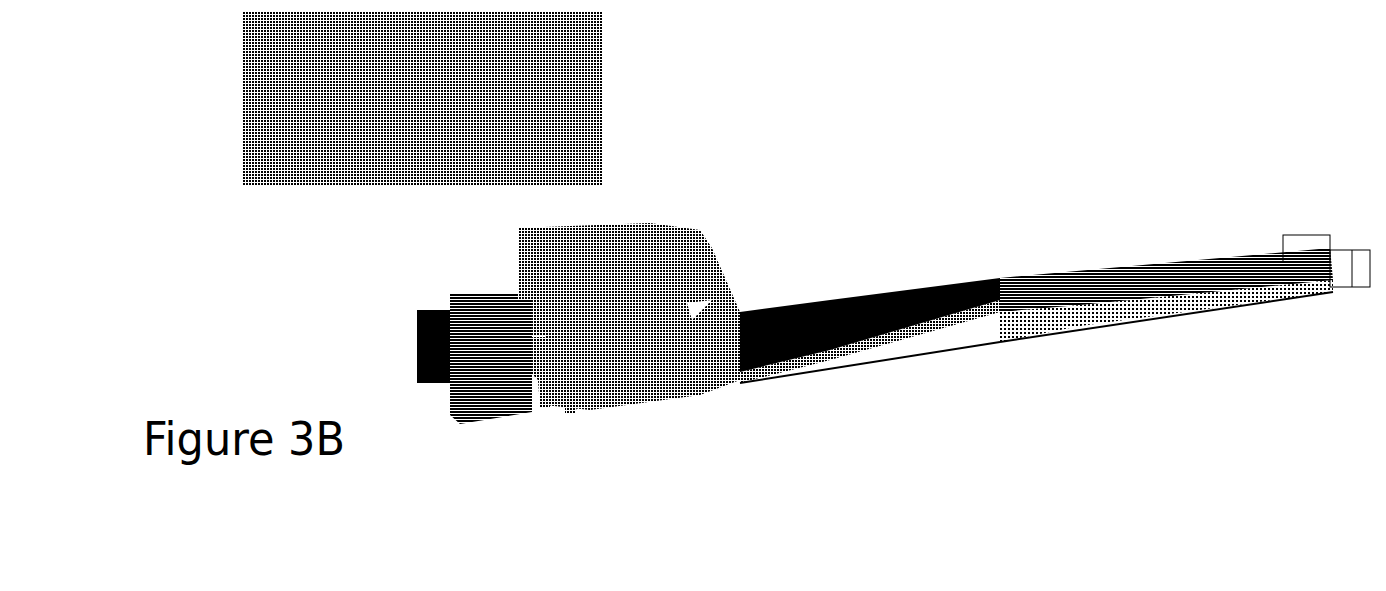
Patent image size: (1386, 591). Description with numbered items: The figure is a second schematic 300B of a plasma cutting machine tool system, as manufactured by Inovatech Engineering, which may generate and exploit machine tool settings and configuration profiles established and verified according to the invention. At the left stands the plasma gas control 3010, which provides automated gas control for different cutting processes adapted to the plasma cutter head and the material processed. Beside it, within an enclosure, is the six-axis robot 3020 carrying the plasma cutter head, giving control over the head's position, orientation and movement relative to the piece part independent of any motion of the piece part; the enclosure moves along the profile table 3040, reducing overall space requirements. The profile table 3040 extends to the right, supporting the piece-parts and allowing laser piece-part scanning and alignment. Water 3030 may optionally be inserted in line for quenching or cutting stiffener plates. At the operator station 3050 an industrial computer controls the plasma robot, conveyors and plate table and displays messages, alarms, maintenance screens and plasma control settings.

The second schematic 300B is at (806, 240).
The plasma gas control 3010 is at (417, 342).
The 6-axis robot 3020 is at (660, 228).
The water 3030 is at (802, 370).
The profile table 3040 is at (1152, 310).
The operator station 3050 is at (533, 383).